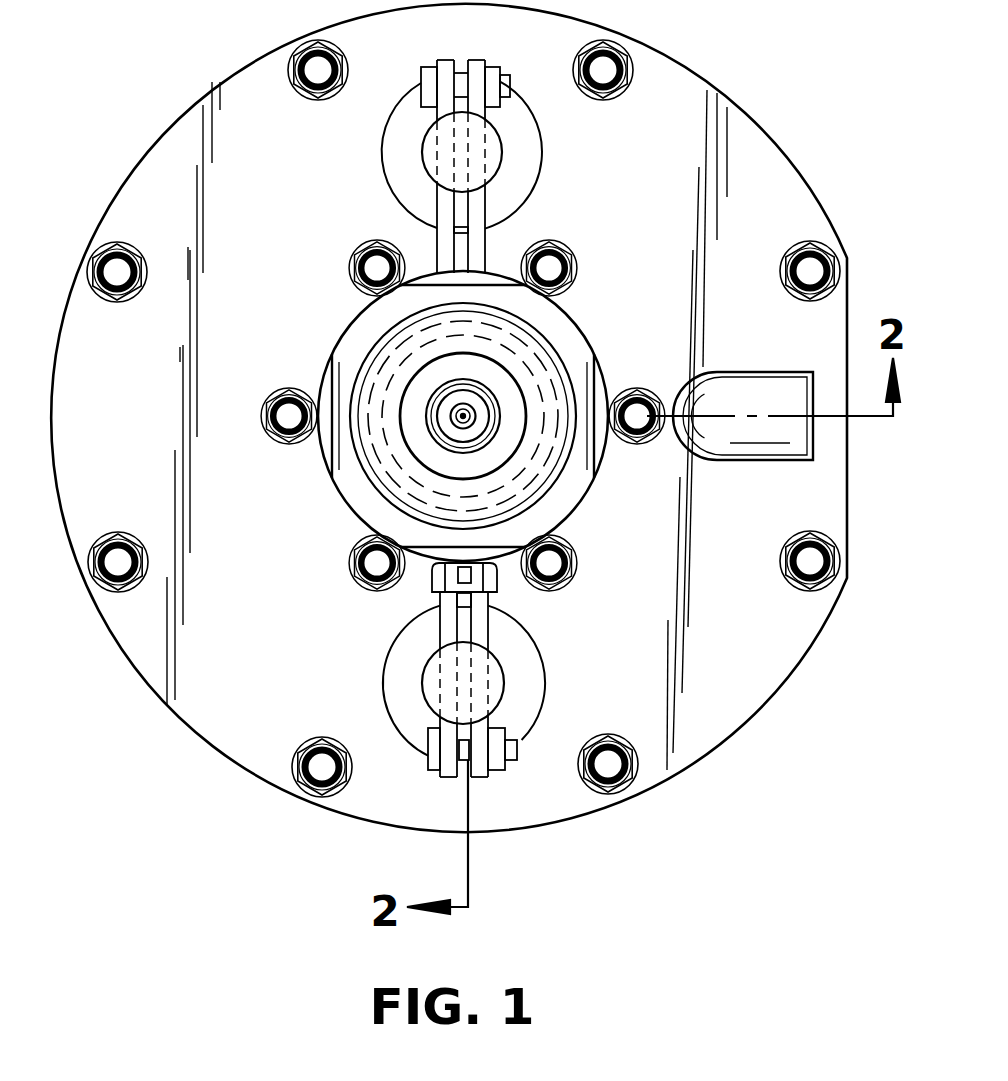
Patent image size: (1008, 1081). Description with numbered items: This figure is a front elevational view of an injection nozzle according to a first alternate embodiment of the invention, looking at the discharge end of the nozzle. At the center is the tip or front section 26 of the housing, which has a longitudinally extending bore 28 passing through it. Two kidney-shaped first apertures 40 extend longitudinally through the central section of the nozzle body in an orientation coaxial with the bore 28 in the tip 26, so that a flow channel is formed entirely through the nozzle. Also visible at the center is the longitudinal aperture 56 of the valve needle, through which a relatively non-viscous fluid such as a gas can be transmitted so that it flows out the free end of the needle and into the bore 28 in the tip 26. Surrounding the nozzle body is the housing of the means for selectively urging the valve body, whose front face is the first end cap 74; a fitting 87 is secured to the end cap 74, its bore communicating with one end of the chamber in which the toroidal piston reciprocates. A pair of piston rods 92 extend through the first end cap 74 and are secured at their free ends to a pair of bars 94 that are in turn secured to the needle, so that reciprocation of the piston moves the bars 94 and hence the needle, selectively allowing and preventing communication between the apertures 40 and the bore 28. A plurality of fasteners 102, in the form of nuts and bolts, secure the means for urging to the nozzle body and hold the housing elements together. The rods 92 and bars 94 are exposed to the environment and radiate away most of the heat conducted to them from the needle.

The tip or front section 26 is at (373, 458).
The bore 28 is at (447, 366).
The first aperture 40 is at (393, 380).
The longitudinal aperture 56 is at (460, 420).
The first end cap 74 is at (703, 683).
The fitting 87 is at (727, 430).
The piston rods 92 is at (495, 683).
The bars 94 is at (450, 630).
The fasteners 102 is at (552, 266).